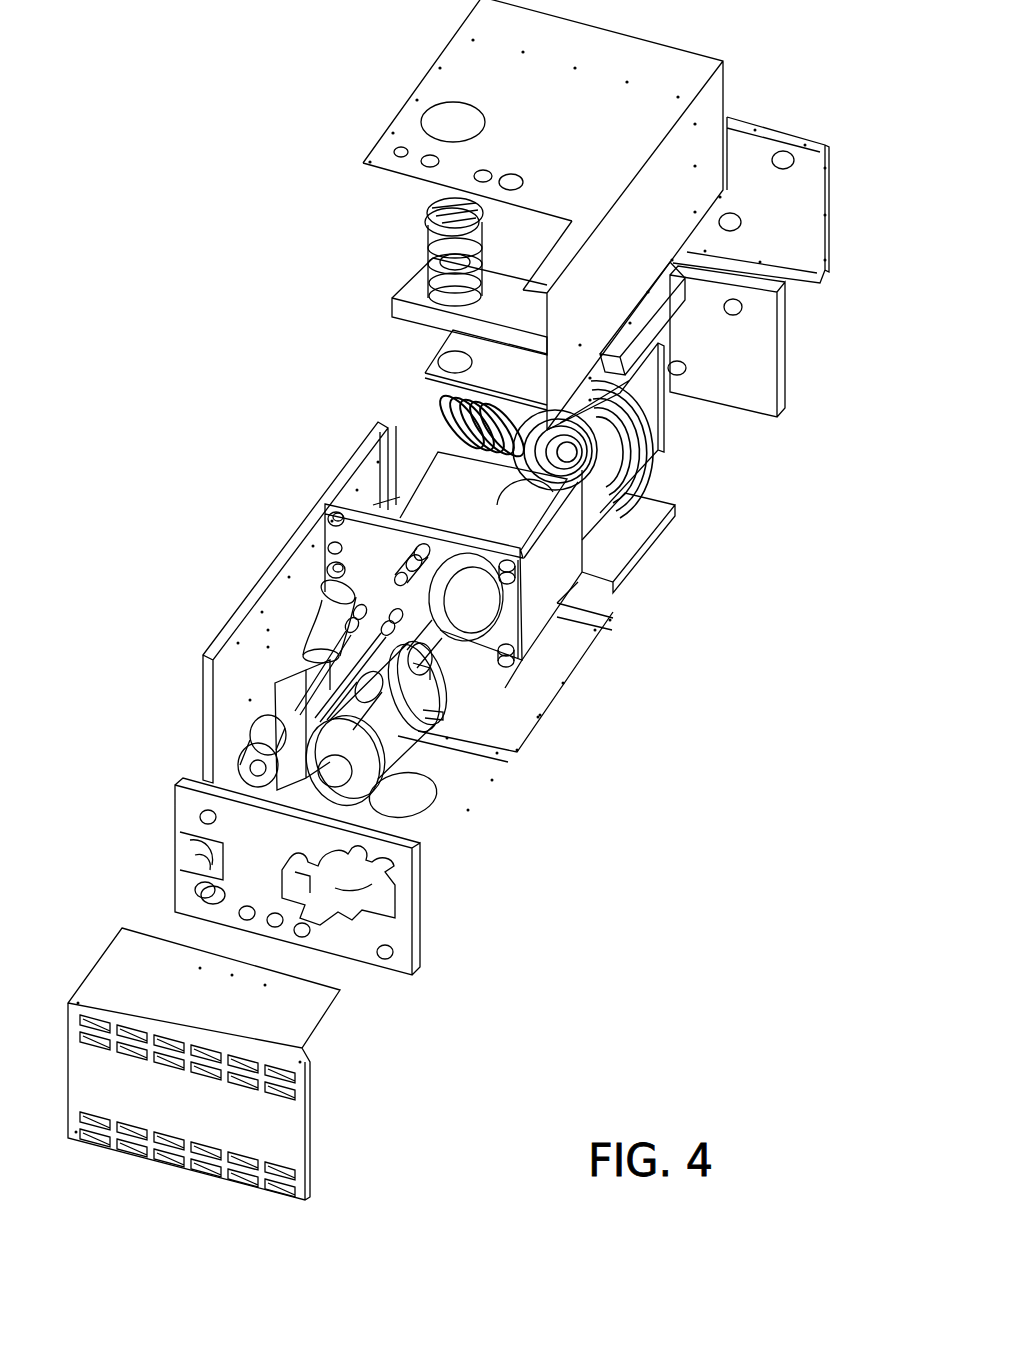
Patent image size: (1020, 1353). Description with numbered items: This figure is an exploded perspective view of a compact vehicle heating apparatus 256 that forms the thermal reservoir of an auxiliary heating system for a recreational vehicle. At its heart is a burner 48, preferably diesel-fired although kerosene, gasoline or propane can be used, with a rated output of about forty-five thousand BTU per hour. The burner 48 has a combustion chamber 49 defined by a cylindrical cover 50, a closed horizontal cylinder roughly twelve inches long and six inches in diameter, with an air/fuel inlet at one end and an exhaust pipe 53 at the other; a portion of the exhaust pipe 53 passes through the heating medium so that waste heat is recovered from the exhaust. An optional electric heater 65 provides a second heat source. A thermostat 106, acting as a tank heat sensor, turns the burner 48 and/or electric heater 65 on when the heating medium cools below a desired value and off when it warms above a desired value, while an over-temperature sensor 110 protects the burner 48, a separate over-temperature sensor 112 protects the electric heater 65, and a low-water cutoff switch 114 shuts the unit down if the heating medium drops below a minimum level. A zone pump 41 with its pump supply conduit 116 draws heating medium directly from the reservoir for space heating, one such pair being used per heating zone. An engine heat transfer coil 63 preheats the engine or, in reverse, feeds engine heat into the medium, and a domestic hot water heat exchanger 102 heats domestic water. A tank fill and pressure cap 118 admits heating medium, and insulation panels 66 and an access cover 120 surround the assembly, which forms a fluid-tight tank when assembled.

The zone pump 41 is at (243, 770).
The burner 48 is at (397, 738).
The combustion chamber 49 is at (475, 590).
The cylindrical cover 50 is at (528, 527).
The exhaust pipe 53 is at (440, 425).
The engine heat transfer coil 63 is at (428, 392).
The electric heater 65 is at (327, 573).
The insulation panels 66 is at (415, 290).
The domestic hot water heat exchanger 102 is at (622, 420).
The thermostat 106 is at (396, 577).
The over-temperature sensor 110 is at (500, 580).
The over-temperature sensor 112 is at (327, 553).
The low-water cutoff switch 114 is at (330, 512).
The pump supply conduit 116 is at (258, 672).
The tank fill and pressure cap 118 is at (428, 210).
The access cover 120 is at (320, 1023).
The assembly 256 is at (200, 588).